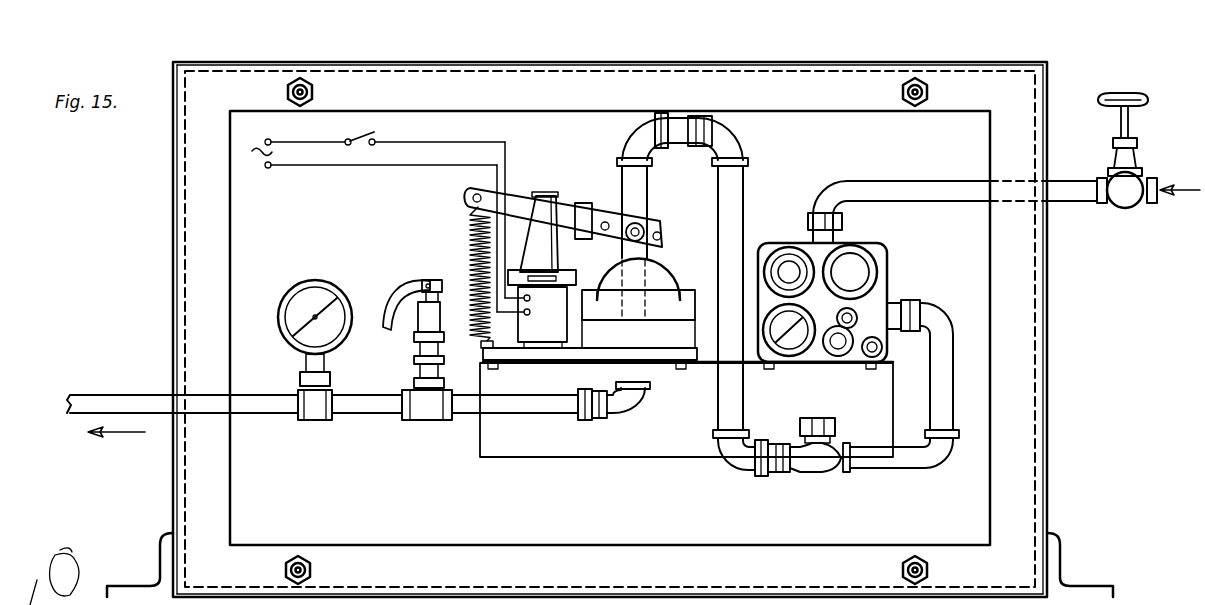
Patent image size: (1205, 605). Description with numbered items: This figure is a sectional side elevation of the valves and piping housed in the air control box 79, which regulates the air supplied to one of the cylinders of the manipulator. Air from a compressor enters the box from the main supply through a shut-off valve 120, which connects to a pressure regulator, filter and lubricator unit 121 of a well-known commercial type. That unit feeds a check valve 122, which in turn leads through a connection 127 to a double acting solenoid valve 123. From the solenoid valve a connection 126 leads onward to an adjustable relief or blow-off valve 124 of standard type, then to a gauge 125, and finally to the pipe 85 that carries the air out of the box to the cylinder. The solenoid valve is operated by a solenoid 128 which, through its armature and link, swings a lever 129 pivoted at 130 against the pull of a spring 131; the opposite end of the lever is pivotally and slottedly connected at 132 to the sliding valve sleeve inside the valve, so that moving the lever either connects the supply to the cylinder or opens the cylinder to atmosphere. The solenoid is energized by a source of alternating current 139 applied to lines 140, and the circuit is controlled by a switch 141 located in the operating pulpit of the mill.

The air control box 79 is at (637, 62).
The pipe 85 is at (116, 406).
The shut-off valve 120 is at (1126, 208).
The pressure regulator, filter and lubricator unit 121 is at (822, 275).
The check valve 122 is at (820, 466).
The double acting solenoid valve 123 is at (650, 284).
The adjustable relief or blow-off valve 124 is at (417, 374).
The gauge 125 is at (325, 276).
The connection to the cylinder 126 is at (648, 385).
The connection to the check valve 127 is at (635, 190).
The solenoid 128 is at (560, 326).
The lever 129 is at (525, 200).
The pivot 130 is at (584, 212).
The spring 131 is at (468, 247).
The pivotal and slotted connection 132 is at (645, 228).
The source of alternating current 139 is at (252, 147).
The lines 140 is at (346, 170).
The switch 141 is at (360, 131).